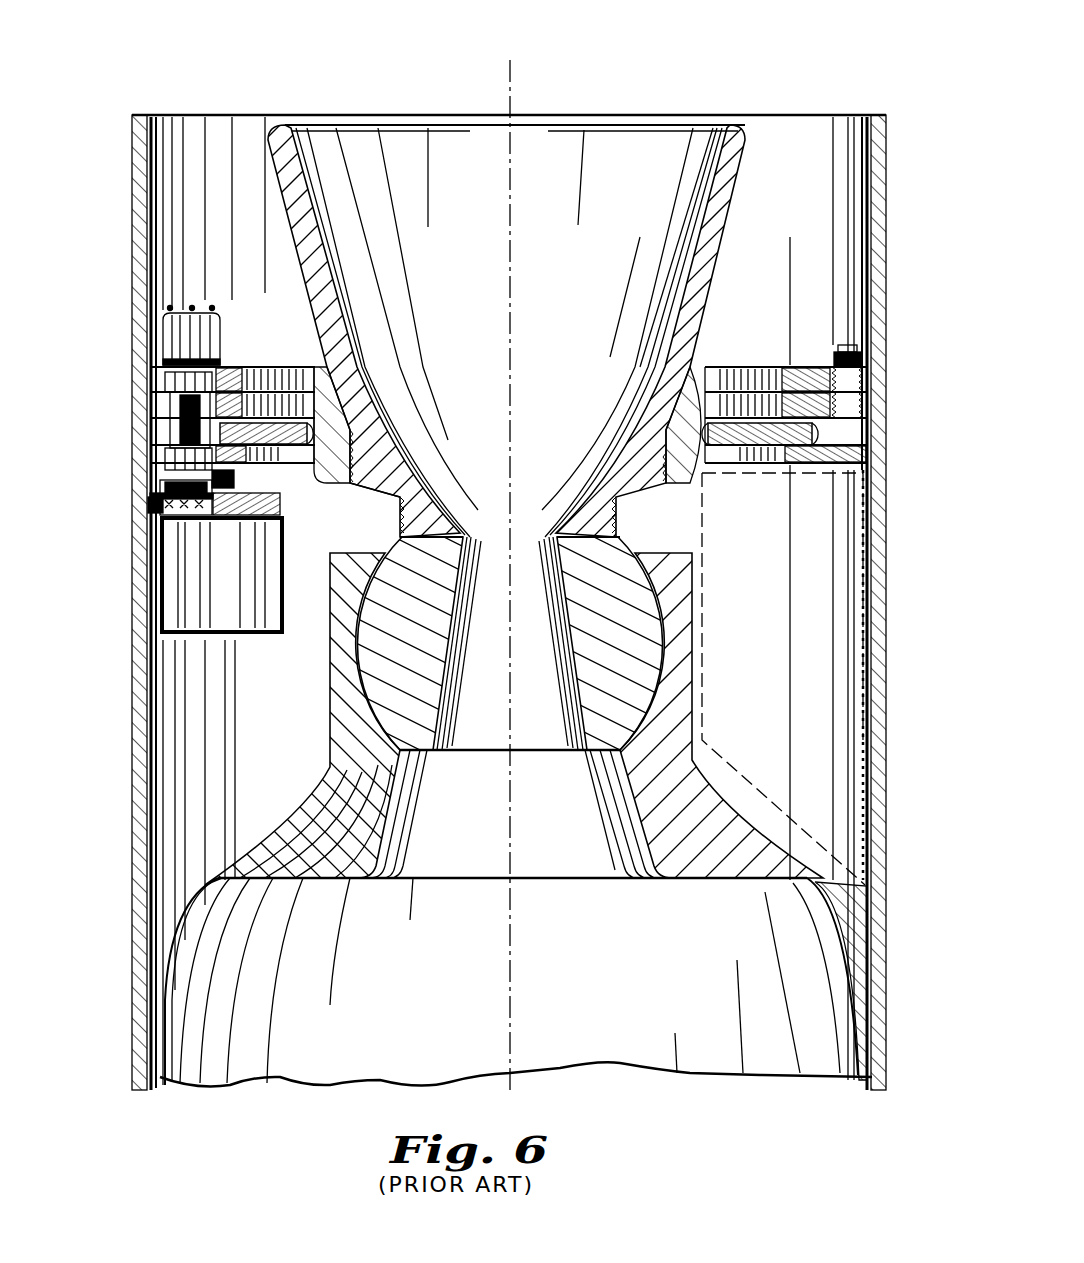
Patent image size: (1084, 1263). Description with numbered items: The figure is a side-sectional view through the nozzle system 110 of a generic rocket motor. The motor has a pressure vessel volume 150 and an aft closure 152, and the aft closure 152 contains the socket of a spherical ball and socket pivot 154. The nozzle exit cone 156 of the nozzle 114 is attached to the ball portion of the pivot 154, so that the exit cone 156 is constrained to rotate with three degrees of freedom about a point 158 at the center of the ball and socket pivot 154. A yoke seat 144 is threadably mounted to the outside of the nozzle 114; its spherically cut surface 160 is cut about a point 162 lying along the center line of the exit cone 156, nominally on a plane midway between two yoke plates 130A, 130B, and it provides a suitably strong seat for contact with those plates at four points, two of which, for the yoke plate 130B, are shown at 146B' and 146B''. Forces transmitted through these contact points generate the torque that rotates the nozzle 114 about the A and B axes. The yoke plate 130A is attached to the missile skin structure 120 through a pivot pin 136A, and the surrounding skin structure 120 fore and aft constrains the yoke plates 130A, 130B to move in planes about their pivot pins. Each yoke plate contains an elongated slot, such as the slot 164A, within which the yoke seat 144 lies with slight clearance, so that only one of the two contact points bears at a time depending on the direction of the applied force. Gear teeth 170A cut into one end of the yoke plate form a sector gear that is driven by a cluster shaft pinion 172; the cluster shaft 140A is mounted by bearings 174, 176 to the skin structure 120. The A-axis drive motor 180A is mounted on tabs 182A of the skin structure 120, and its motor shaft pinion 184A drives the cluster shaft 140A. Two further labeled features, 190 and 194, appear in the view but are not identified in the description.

The nozzle system 110 is at (828, 72).
The nozzle 114 is at (542, 307).
The missile skin structure 120 is at (880, 246).
The yoke plate 130A is at (862, 410).
The yoke plate 130B is at (812, 465).
The pivot pin 136A is at (832, 354).
The cluster shaft 140A is at (152, 470).
The yoke seat 144 is at (320, 350).
The contact point 146B' is at (732, 494).
The contact point 146B'' is at (353, 524).
The pressure vessel volume 150 is at (460, 1000).
The aft closure 152 is at (862, 965).
The spherical ball and socket pivot 154 is at (625, 756).
The nozzle exit cone 156 is at (715, 182).
The point 158 is at (514, 648).
The spherically cut surface 160 is at (304, 470).
The point 162 is at (515, 428).
The elongated slot 164A is at (738, 398).
The gear teeth 170A is at (224, 380).
The cluster shaft pinion 172 is at (152, 410).
The bearing 174 is at (150, 374).
The bearing 176 is at (162, 512).
The A-axis drive motor 180A is at (206, 632).
The tabs 182A is at (150, 502).
The motor shaft pinion 184A is at (228, 518).
The case wall liner 190 is at (870, 606).
The connector 194 is at (213, 318).